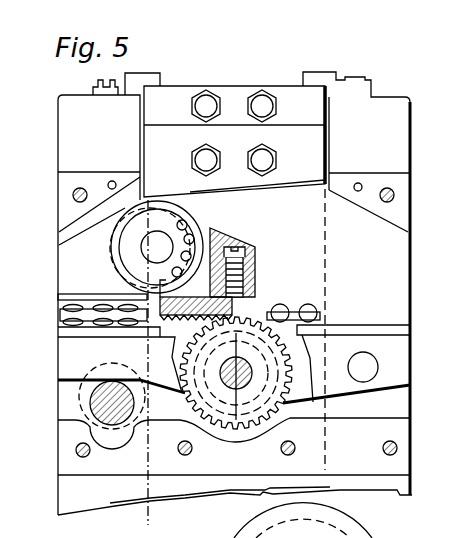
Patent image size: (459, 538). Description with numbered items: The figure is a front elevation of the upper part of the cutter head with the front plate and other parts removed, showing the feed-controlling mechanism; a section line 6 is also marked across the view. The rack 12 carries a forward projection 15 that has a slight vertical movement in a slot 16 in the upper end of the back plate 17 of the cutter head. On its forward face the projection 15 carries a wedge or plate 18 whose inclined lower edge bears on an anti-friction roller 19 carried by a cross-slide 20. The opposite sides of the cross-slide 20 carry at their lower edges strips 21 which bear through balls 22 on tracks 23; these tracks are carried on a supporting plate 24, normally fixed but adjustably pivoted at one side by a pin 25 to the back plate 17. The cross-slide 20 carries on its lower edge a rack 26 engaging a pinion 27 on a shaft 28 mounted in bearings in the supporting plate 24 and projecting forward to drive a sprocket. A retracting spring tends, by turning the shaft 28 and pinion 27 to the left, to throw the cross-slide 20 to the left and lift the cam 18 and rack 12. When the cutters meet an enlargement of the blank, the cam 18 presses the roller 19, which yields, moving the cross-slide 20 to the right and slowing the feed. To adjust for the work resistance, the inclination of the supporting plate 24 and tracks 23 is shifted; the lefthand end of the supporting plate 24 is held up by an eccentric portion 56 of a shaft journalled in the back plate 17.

The section line 6 is at (205, 80).
The rack 12 is at (150, 512).
The forward projection 15 is at (281, 89).
The slot 16 is at (275, 196).
The back plate 17 is at (392, 245).
The wedge or plate 18 is at (251, 133).
The anti-friction roller 19 is at (196, 219).
The cross-slide 20 is at (131, 248).
The strips 21 is at (77, 300).
The balls 22 is at (72, 323).
The tracks 23 is at (80, 334).
The supporting plate 24 is at (63, 370).
The pin 25 is at (376, 362).
The rack 26 is at (255, 287).
The pinion 27 is at (265, 387).
The shaft 28 is at (253, 370).
The eccentric portion 56 is at (116, 424).